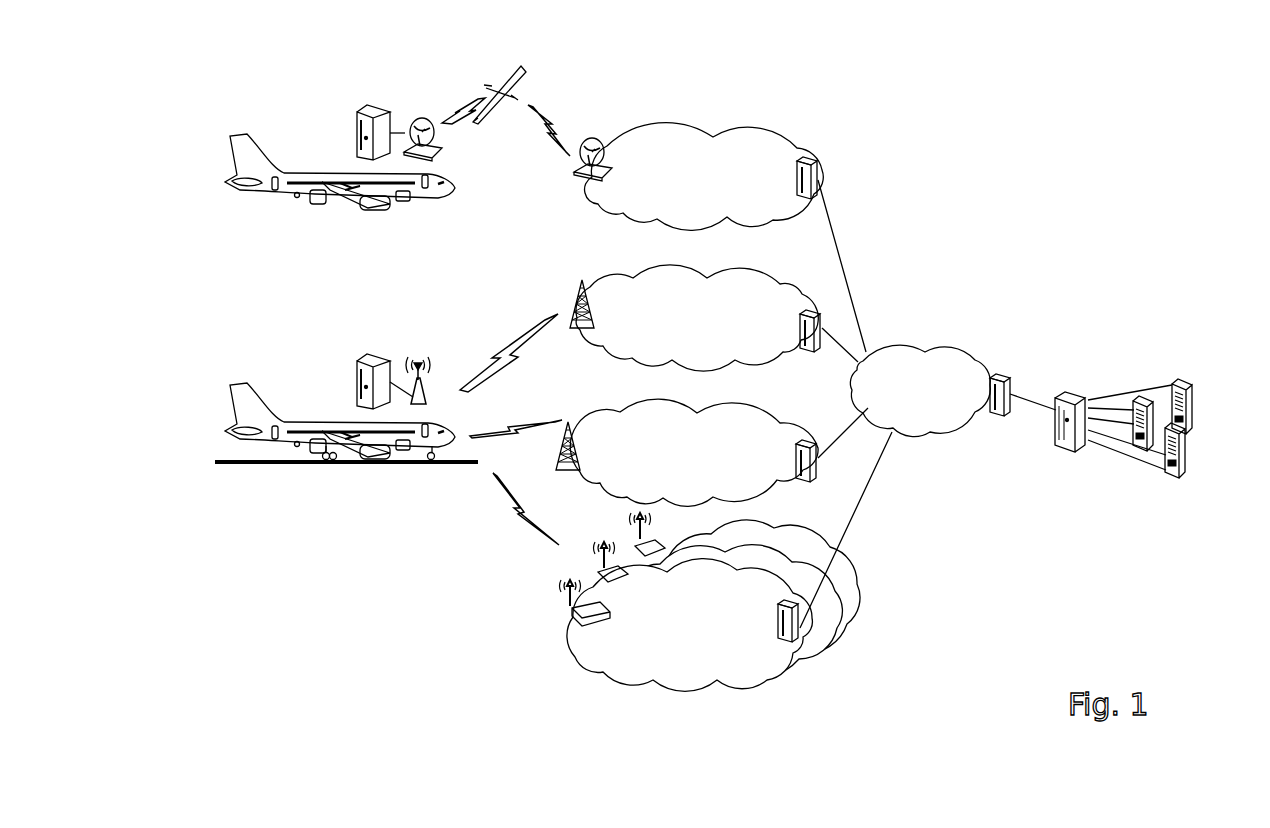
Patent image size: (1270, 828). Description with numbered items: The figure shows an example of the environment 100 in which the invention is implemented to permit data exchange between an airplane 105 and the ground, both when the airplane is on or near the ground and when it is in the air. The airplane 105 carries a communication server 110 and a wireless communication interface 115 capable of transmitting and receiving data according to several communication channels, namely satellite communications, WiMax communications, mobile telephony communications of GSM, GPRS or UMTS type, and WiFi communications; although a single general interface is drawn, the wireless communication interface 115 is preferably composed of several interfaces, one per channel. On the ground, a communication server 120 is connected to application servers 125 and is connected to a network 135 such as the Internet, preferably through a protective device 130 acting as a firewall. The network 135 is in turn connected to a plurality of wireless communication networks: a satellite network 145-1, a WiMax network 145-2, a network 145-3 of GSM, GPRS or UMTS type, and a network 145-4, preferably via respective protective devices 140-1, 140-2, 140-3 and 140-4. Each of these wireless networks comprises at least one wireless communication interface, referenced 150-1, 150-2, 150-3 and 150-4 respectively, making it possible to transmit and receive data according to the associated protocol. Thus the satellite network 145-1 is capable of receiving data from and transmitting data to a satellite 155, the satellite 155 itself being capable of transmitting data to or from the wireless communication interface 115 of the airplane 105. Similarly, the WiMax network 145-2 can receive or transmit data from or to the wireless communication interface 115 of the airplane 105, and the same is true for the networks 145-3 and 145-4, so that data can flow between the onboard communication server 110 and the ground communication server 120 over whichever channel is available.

The environment 100 is at (978, 54).
The airplane 105 is at (240, 180).
The communication server 110 is at (380, 108).
The wireless communication interface 115 is at (425, 118).
The communication server 120 is at (1066, 445).
The application servers 125 is at (1172, 472).
The protective device 130 is at (997, 374).
The network 135 is at (922, 348).
The protective device 140-1 is at (820, 166).
The protective device 140-2 is at (814, 350).
The protective device 140-3 is at (808, 478).
The protective device 140-4 is at (792, 648).
The satellite network 145-1 is at (788, 140).
The WiMax network 145-2 is at (634, 274).
The network of GSM, GPRS or UMTS type 145-3 is at (716, 412).
The network 145-4 is at (838, 648).
The wireless communication interface 150-1 is at (592, 138).
The wireless communication interface 150-2 is at (572, 290).
The wireless communication interface 150-3 is at (568, 420).
The wireless communication interface 150-4 is at (566, 606).
The satellite 155 is at (520, 68).